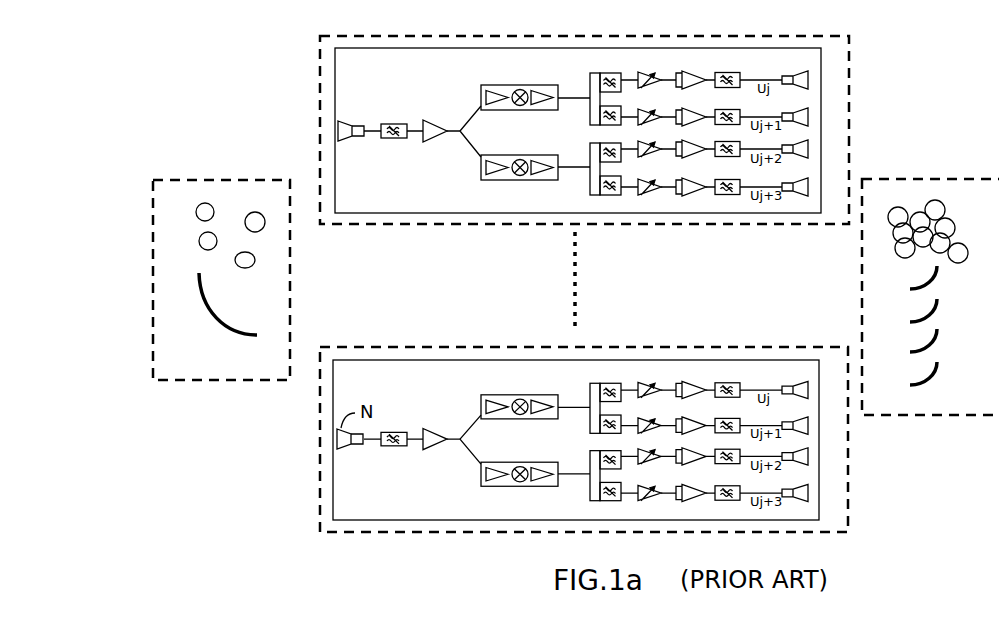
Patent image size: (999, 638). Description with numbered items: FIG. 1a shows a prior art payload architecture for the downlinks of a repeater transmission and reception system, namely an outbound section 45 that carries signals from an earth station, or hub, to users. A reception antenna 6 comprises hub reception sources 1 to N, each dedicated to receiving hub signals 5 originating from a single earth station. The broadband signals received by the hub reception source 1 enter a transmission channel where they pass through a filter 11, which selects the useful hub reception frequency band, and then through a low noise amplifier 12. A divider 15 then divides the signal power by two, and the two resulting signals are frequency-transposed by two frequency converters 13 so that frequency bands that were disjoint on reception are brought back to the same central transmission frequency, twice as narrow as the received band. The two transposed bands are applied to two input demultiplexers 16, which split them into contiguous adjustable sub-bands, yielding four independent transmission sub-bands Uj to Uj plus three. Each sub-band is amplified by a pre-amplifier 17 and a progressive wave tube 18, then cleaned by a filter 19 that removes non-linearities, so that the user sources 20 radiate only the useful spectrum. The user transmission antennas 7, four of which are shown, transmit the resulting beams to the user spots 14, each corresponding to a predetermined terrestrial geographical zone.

The hub reception source 1 is at (353, 116).
The hub signals 5 is at (216, 248).
The reception antenna 6 is at (218, 314).
The user transmission antenna 7 is at (947, 325).
The filter 11 is at (392, 305).
The low noise amplifier 12 is at (422, 271).
The frequency converter 13 is at (519, 272).
The user spot 14 is at (943, 238).
The divider 15 is at (460, 270).
The input demultiplexer IMUX 16 is at (589, 278).
The pre-amplifier 17 is at (661, 275).
The progressive wave tube 18 is at (703, 275).
The filter 19 is at (733, 282).
The user source 20 is at (814, 286).
The outbound section 45 is at (378, 173).